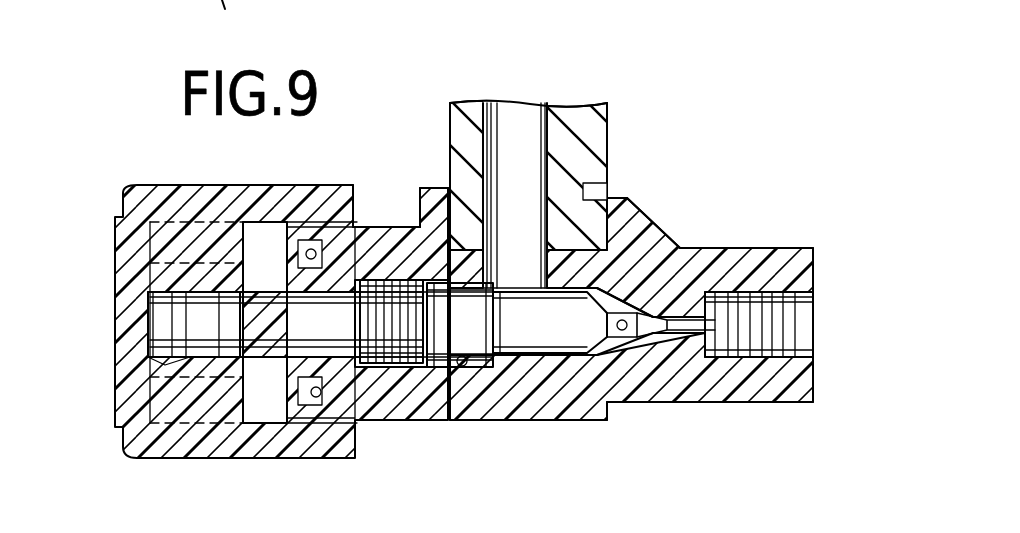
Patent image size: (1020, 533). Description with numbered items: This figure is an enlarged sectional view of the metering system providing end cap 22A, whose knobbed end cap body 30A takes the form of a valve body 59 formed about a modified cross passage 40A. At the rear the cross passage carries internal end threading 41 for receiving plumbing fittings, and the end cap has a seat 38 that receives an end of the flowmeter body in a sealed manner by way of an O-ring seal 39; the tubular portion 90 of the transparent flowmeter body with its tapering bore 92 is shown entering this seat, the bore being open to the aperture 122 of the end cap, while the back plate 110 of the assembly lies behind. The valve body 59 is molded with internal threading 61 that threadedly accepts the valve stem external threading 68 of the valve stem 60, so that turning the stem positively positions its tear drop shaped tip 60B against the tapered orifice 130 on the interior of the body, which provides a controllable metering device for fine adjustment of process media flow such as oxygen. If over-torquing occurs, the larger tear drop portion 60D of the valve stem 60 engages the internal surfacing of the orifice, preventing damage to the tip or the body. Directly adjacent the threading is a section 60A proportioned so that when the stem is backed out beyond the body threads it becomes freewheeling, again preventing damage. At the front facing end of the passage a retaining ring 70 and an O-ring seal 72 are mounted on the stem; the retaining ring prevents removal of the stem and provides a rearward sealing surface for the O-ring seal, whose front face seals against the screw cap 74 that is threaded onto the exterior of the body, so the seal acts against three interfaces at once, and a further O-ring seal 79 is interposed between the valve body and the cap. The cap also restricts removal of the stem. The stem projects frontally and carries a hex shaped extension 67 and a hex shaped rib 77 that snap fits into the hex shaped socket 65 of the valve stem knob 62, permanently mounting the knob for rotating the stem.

The end cap 22A is at (598, 438).
The knobbed end cap body 30A is at (791, 404).
The seat 38 is at (525, 272).
The O-ring seal 39 is at (462, 240).
The cross passage 40A is at (655, 292).
The internal end threading 41 is at (785, 313).
The valve body 59 is at (750, 254).
The valve stem 60 is at (530, 335).
The section 60A is at (347, 331).
The tear drop shaped tip 60B is at (642, 333).
The larger tear drop portion 60D is at (492, 320).
The internal threading 61 is at (462, 366).
The valve stem knob 62 is at (289, 226).
The hex shaped socket 65 is at (207, 291).
The hex shaped extension 67 is at (193, 321).
The valve stem external threading 68 is at (396, 228).
The retaining ring 70 is at (333, 375).
The O-ring seal 72 is at (312, 372).
The screw cap 74 is at (365, 268).
The hex shaped rib 77 is at (190, 355).
The O-ring seal 79 is at (316, 248).
The tubular portion 90 is at (465, 103).
The tapering bore 92 is at (547, 104).
The back plate 110 is at (605, 125).
The aperture 122 is at (587, 182).
The tapered orifice 130 is at (617, 349).